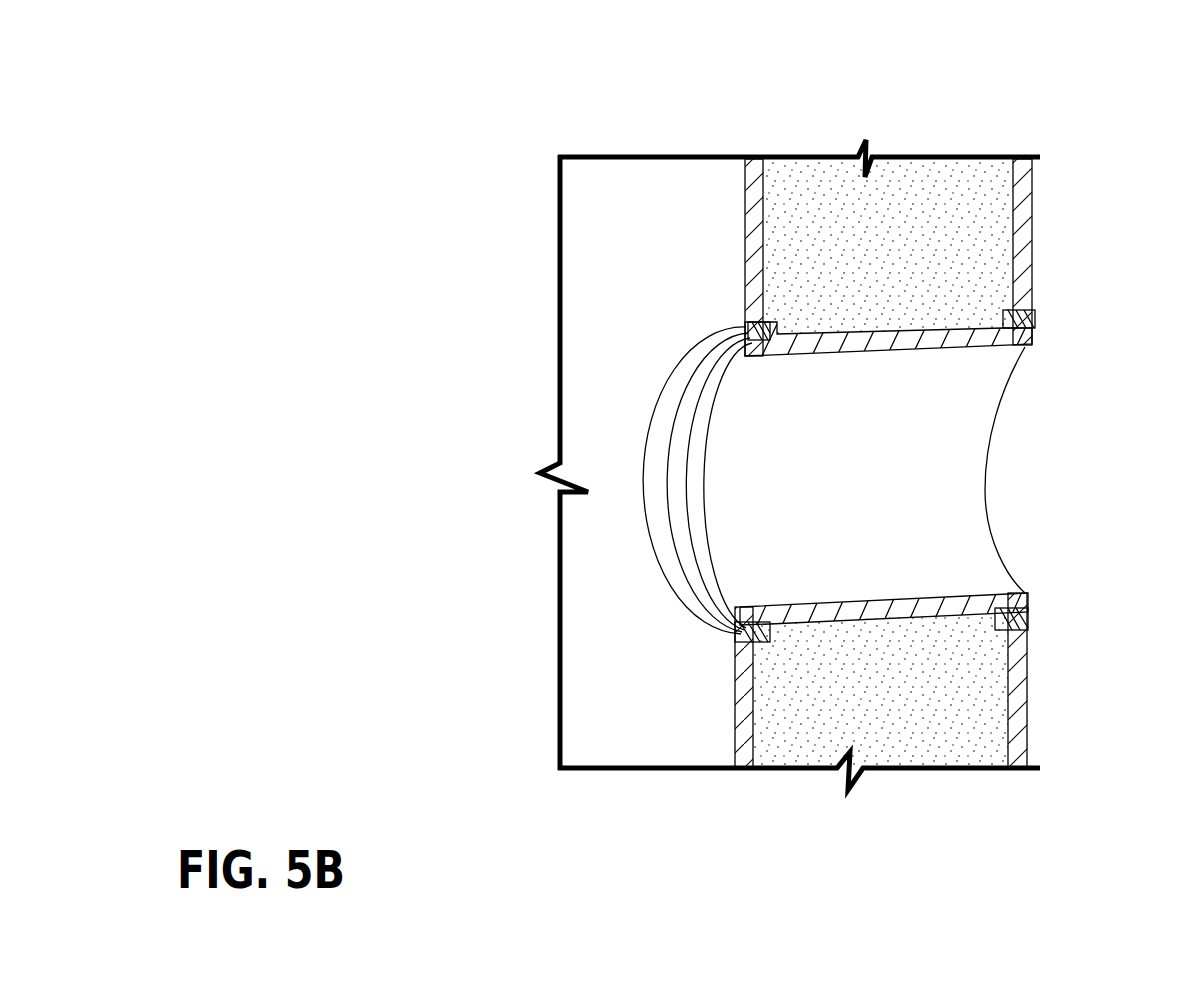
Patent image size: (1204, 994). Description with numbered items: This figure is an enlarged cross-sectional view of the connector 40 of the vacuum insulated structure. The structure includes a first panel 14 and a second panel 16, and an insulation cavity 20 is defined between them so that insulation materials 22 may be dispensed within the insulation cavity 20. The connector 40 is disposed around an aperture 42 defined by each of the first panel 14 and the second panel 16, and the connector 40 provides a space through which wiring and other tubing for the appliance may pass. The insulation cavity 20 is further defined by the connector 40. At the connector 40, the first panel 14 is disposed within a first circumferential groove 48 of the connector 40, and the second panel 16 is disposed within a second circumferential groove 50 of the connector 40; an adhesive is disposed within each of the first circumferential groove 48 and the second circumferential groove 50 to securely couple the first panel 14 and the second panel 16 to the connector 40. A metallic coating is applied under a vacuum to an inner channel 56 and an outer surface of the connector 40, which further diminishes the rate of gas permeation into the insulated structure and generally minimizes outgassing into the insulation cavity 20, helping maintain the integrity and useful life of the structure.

The first panel 14 is at (602, 603).
The second panel 16 is at (1007, 715).
The insulation cavity 20 is at (802, 211).
The insulation materials 22 is at (875, 727).
The connector 40 is at (737, 428).
The aperture 42 is at (742, 322).
The first circumferential groove 48 is at (745, 320).
The second circumferential groove 50 is at (1032, 313).
The inner channel 56 is at (1027, 347).